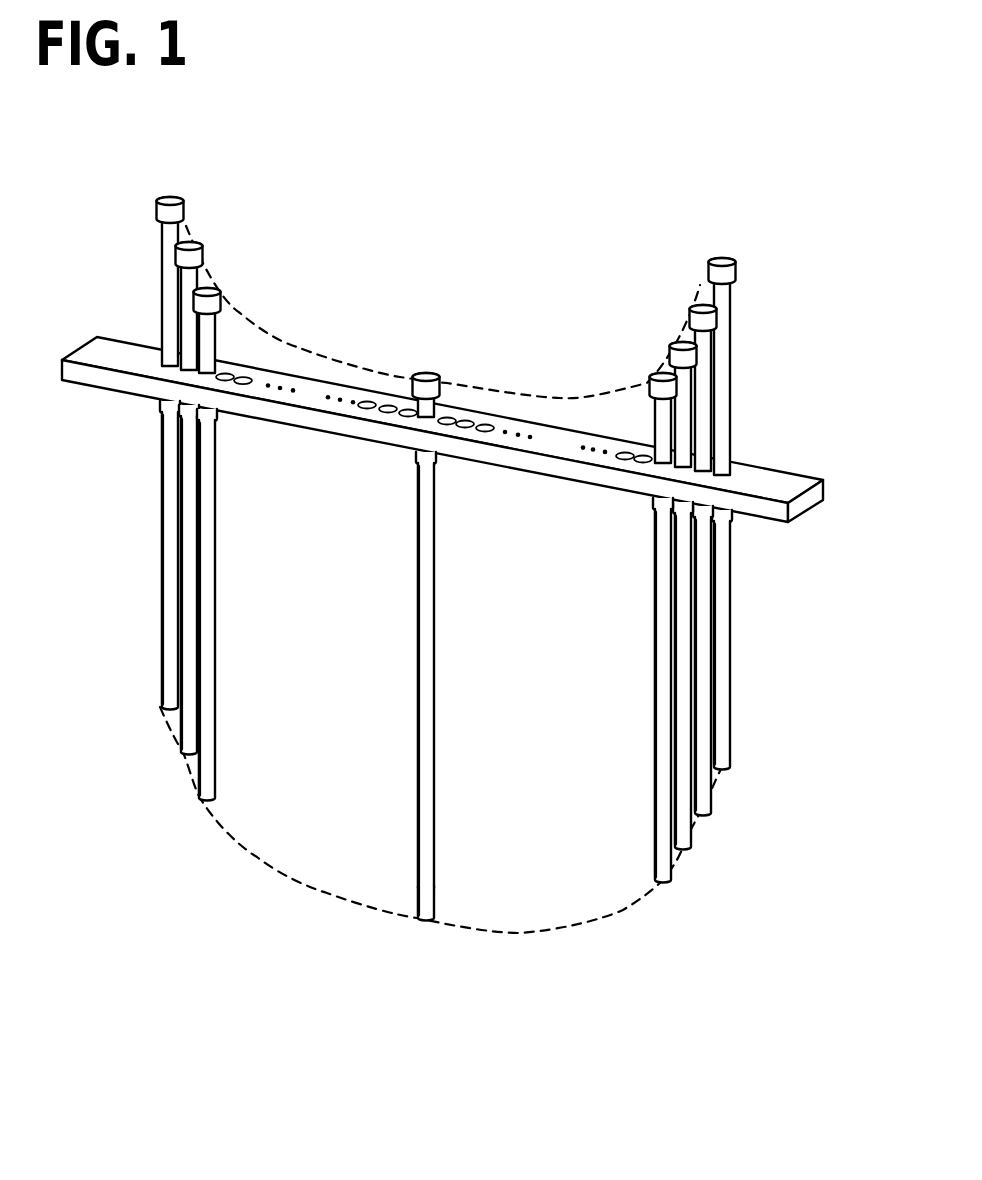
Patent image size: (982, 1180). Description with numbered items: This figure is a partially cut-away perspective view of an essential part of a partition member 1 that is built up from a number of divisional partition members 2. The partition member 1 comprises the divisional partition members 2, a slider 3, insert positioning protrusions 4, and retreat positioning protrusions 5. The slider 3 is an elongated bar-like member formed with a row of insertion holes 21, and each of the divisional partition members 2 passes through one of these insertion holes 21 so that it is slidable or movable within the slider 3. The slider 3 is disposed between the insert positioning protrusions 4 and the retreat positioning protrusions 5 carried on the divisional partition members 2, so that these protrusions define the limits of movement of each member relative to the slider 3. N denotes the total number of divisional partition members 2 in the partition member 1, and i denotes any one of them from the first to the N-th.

The partition member 1 is at (453, 216).
The divisional partition members 2 is at (440, 616).
The slider 3 is at (484, 427).
The insert positioning protrusions 4 is at (728, 518).
The retreat positioning protrusions 5 is at (676, 342).
The insertion holes 21 is at (630, 452).